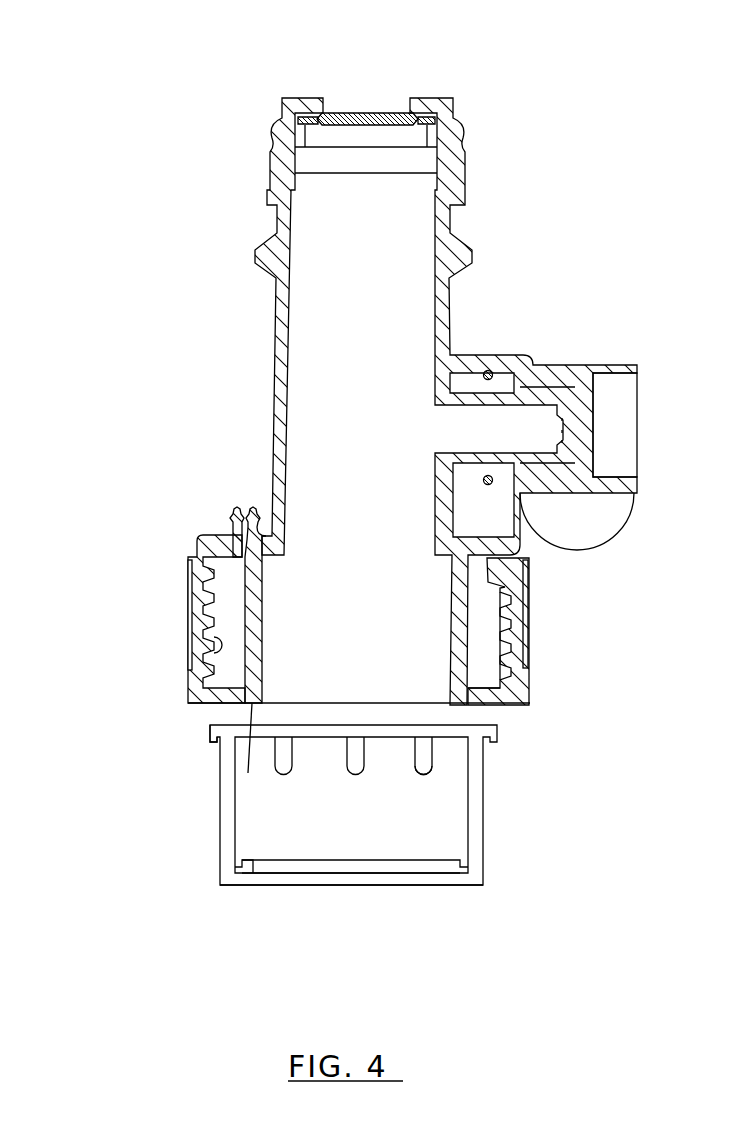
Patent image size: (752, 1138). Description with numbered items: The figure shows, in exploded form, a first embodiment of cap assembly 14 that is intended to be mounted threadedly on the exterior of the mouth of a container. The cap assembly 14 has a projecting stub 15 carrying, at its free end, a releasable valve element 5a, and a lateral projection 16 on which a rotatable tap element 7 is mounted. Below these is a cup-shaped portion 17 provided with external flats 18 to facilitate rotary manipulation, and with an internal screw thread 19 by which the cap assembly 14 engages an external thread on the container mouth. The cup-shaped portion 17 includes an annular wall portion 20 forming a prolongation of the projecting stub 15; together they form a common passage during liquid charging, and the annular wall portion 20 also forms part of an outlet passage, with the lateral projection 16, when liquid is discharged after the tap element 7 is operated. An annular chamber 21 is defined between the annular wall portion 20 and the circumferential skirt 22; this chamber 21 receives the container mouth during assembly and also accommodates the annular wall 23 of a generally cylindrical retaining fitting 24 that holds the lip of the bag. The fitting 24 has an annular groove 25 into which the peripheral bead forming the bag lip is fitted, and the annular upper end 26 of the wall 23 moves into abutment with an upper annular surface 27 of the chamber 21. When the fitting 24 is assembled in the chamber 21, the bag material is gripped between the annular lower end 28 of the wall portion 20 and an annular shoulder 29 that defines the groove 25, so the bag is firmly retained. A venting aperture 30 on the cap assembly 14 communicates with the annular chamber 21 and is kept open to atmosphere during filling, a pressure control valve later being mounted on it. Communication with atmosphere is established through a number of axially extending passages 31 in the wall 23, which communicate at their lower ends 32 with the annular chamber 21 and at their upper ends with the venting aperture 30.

The releasable valve element 5a is at (376, 112).
The rotatable tap element 7 is at (583, 375).
The cap assembly 14 is at (533, 648).
The projecting stub 15 is at (447, 311).
The lateral projection 16 is at (503, 380).
The cup-shaped portion 17 is at (536, 554).
The external flats 18 is at (188, 622).
The internal screw thread 19 is at (207, 657).
The annular wall portion 20 is at (253, 612).
The annular chamber 21 is at (488, 673).
The circumferential skirt 22 is at (520, 682).
The annular wall 23 is at (477, 780).
The retaining fitting 24 is at (492, 861).
The annular groove 25 is at (238, 862).
The annular upper end 26 is at (210, 718).
The upper annular surface 27 is at (188, 573).
The annular lower end 28 is at (248, 773).
The annular shoulder 29 is at (248, 870).
The venting aperture 30 is at (243, 500).
The axially extending passages 31 is at (420, 750).
The lower ends 32 is at (423, 772).